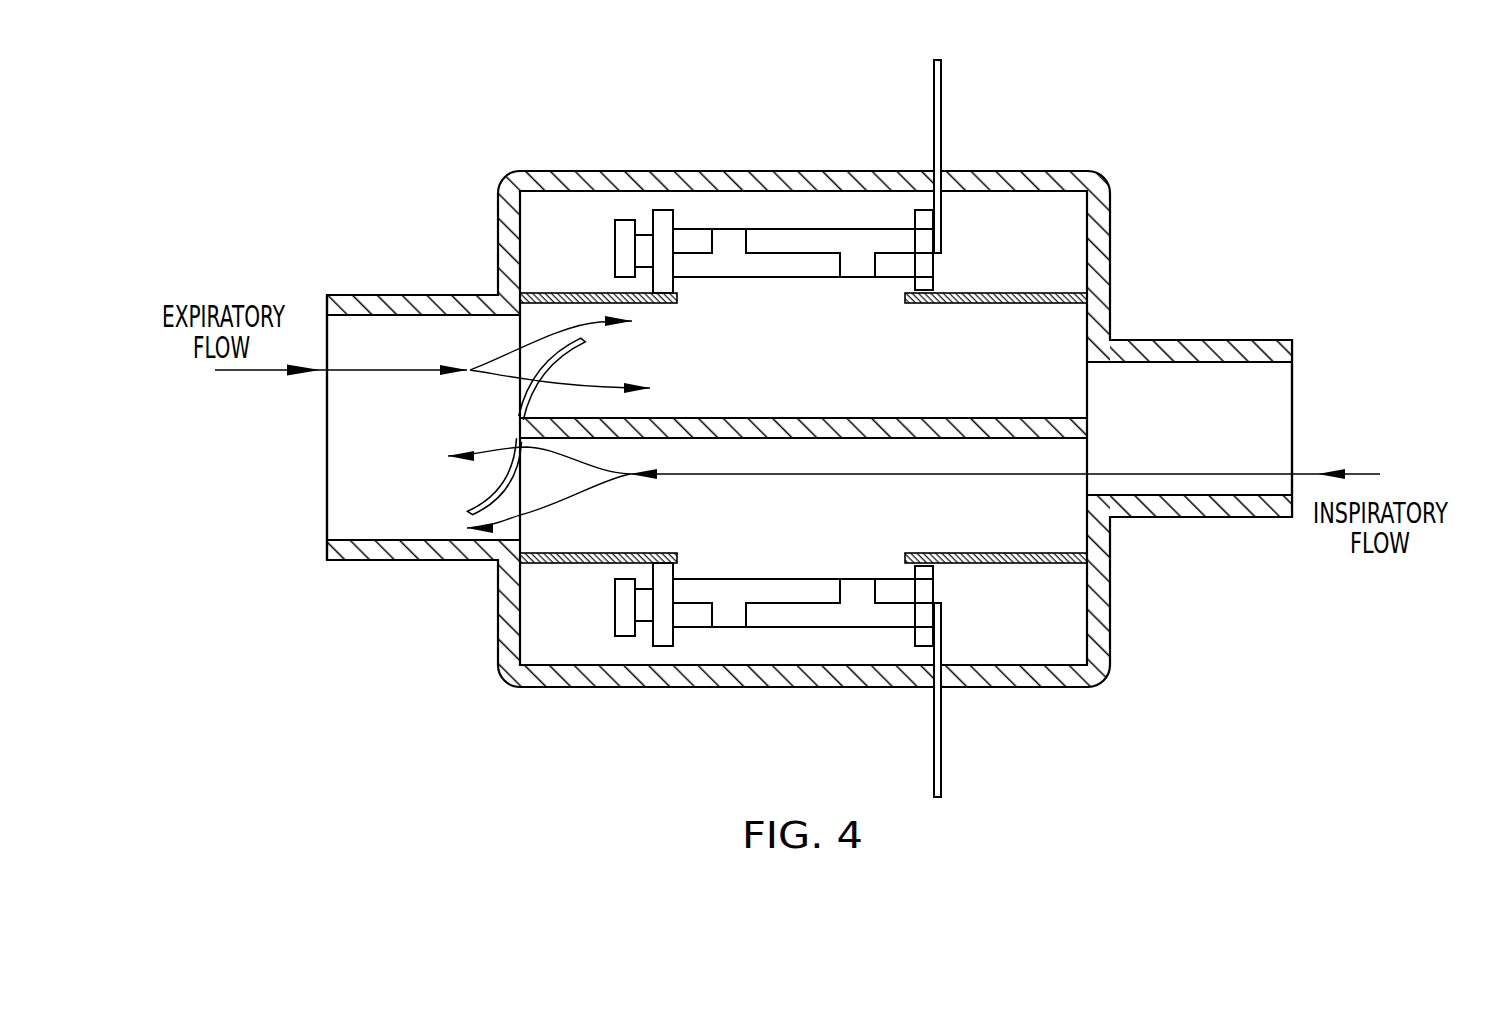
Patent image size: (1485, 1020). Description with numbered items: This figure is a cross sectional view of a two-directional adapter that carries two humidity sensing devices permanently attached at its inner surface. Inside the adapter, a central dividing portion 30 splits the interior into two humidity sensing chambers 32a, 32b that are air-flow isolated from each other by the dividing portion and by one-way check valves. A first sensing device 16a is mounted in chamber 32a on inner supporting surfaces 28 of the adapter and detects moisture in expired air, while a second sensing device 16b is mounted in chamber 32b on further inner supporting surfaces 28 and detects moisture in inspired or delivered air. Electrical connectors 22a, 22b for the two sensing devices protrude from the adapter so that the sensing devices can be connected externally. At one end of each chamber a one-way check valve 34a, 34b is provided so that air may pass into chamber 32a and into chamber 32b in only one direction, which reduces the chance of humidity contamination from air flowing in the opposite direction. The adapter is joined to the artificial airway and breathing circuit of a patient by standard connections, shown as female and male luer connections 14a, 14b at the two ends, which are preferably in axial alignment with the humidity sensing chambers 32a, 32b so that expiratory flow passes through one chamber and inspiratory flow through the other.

The luer connection 14a is at (372, 527).
The luer connection 14b is at (1177, 378).
The sensing device 16a is at (773, 259).
The sensing device 16b is at (775, 608).
The electrical connector 22a is at (942, 80).
The electrical connector 22b is at (941, 772).
The inner supporting surface 28 is at (590, 293).
The central dividing portion 30 is at (950, 418).
The humidity sensing chamber 32a is at (868, 384).
The humidity sensing chamber 32b is at (858, 525).
The one-way check valve 34a is at (587, 350).
The one-way check valve 34b is at (485, 492).